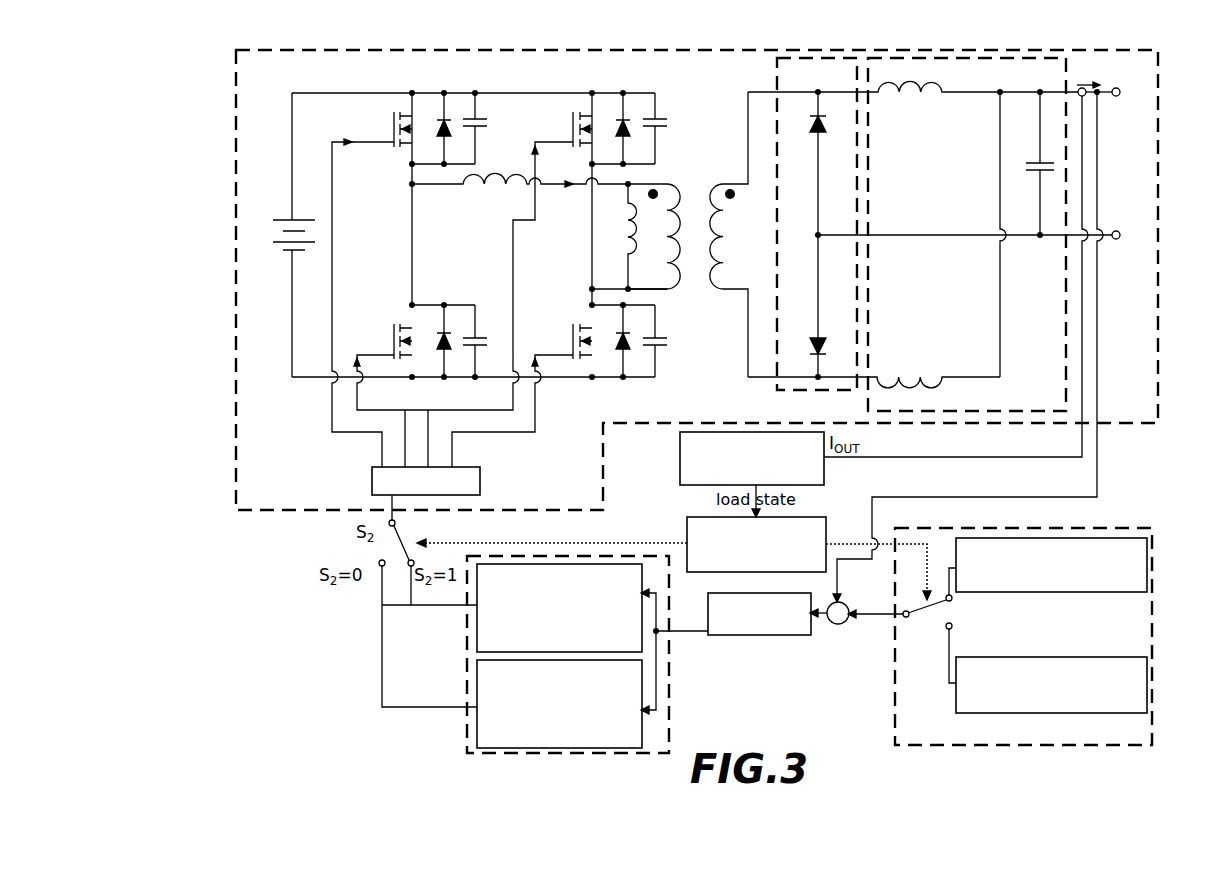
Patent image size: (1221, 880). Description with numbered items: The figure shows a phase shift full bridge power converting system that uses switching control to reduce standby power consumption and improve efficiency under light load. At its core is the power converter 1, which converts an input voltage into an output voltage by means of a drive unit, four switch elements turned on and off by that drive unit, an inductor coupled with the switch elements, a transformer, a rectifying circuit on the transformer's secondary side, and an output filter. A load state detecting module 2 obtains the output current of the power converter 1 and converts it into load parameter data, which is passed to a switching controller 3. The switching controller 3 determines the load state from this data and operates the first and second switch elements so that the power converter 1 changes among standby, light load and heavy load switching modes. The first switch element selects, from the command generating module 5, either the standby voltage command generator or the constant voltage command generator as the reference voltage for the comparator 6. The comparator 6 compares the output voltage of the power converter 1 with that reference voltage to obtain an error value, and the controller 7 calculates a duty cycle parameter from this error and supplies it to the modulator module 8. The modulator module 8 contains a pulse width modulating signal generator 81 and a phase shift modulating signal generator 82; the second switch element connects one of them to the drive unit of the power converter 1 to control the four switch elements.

The power converter 1 is at (228, 126).
The load state detecting module 2 is at (680, 453).
The switching controller 3 is at (686, 528).
The command generating module 5 is at (1160, 600).
The comparator 6 is at (840, 625).
The controller 7 is at (767, 636).
The modulator module 8 is at (678, 657).
The pulse width modulating signal generator 81 is at (477, 620).
The phase shift modulating signal generator 82 is at (477, 728).